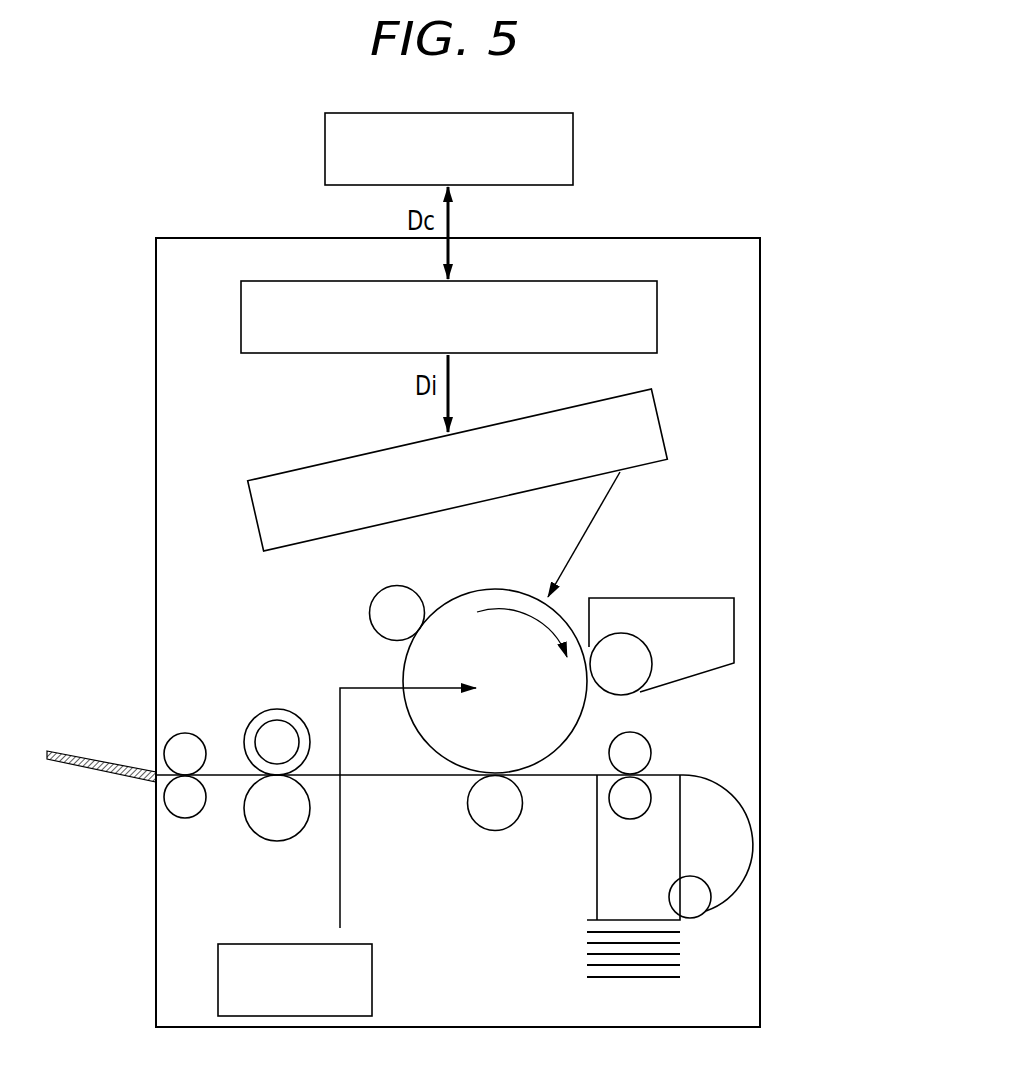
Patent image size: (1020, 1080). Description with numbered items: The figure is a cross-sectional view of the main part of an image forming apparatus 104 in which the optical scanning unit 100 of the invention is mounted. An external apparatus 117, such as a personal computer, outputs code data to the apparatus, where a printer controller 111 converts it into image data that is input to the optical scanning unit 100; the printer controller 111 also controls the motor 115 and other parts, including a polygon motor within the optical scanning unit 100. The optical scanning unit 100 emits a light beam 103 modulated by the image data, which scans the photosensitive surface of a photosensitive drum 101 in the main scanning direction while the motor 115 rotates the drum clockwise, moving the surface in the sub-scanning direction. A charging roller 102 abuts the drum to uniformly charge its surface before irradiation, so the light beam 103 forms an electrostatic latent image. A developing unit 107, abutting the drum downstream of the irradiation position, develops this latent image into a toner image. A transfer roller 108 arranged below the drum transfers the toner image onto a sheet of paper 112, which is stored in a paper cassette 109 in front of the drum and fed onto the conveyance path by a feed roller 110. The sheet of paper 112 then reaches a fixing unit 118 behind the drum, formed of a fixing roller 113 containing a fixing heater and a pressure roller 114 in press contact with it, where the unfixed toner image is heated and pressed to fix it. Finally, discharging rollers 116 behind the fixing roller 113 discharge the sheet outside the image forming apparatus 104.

The optical scanning unit 100 is at (298, 465).
The photosensitive drum 101 is at (583, 710).
The charging roller 102 is at (369, 622).
The light beam 103 is at (590, 530).
The image forming apparatus 104 is at (734, 226).
The developing unit 107 is at (734, 623).
The transfer roller 108 is at (504, 822).
The paper cassette 109 is at (586, 946).
The feed roller 110 is at (690, 912).
The printer controller 111 is at (657, 302).
The sheet of paper 112 is at (400, 778).
The fixing roller 113 is at (276, 722).
The pressure roller 114 is at (256, 823).
The motor 115 is at (372, 993).
The discharging rollers 116 is at (186, 738).
The external apparatus 117 is at (573, 133).
The fixing unit 118 is at (254, 846).